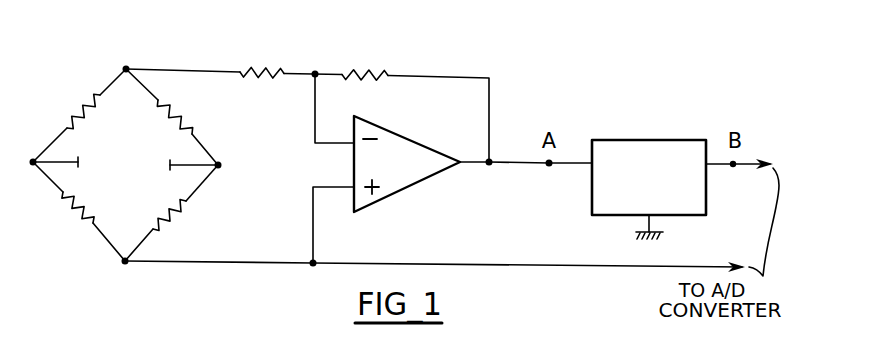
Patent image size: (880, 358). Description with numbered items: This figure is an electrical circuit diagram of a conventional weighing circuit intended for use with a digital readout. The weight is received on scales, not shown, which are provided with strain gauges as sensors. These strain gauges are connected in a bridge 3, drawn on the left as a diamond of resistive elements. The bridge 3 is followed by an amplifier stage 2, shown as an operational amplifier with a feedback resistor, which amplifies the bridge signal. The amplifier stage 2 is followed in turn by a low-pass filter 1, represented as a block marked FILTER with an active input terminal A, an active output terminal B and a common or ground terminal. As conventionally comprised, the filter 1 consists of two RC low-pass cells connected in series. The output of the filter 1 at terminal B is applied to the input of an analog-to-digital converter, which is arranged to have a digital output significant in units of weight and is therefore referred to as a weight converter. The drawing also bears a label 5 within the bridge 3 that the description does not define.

The filter 1 is at (647, 148).
The feedback resistor 2 is at (339, 46).
The bridge resistor (strain gauge) 3 is at (81, 88).
The bridge circuit 5 is at (126, 147).